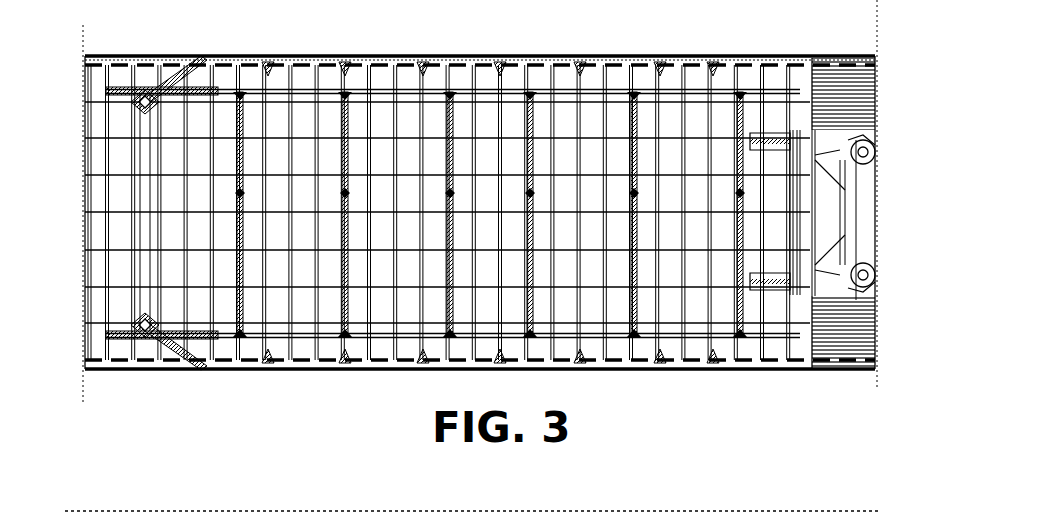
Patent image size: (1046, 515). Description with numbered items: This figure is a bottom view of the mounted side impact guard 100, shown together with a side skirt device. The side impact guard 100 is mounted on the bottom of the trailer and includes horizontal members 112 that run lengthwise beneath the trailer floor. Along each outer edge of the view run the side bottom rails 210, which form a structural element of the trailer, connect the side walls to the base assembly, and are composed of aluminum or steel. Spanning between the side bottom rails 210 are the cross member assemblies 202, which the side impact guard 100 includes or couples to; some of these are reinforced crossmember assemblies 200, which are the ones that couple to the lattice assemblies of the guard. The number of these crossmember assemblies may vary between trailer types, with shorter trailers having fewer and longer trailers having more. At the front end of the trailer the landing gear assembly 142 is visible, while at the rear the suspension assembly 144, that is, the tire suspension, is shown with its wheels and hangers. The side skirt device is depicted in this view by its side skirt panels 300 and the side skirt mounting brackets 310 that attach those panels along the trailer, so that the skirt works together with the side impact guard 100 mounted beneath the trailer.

The side impact guard 100 is at (480, 247).
The horizontal members 112 is at (305, 346).
The landing gear assembly 142 is at (122, 349).
The suspension assembly 144 is at (845, 372).
The reinforced crossmember assemblies 200 is at (243, 86).
The cross member assemblies 202 is at (372, 56).
The side bottom rails 210 is at (134, 56).
The side skirt panels 300 is at (176, 57).
The side skirt mounting brackets 310 is at (271, 60).